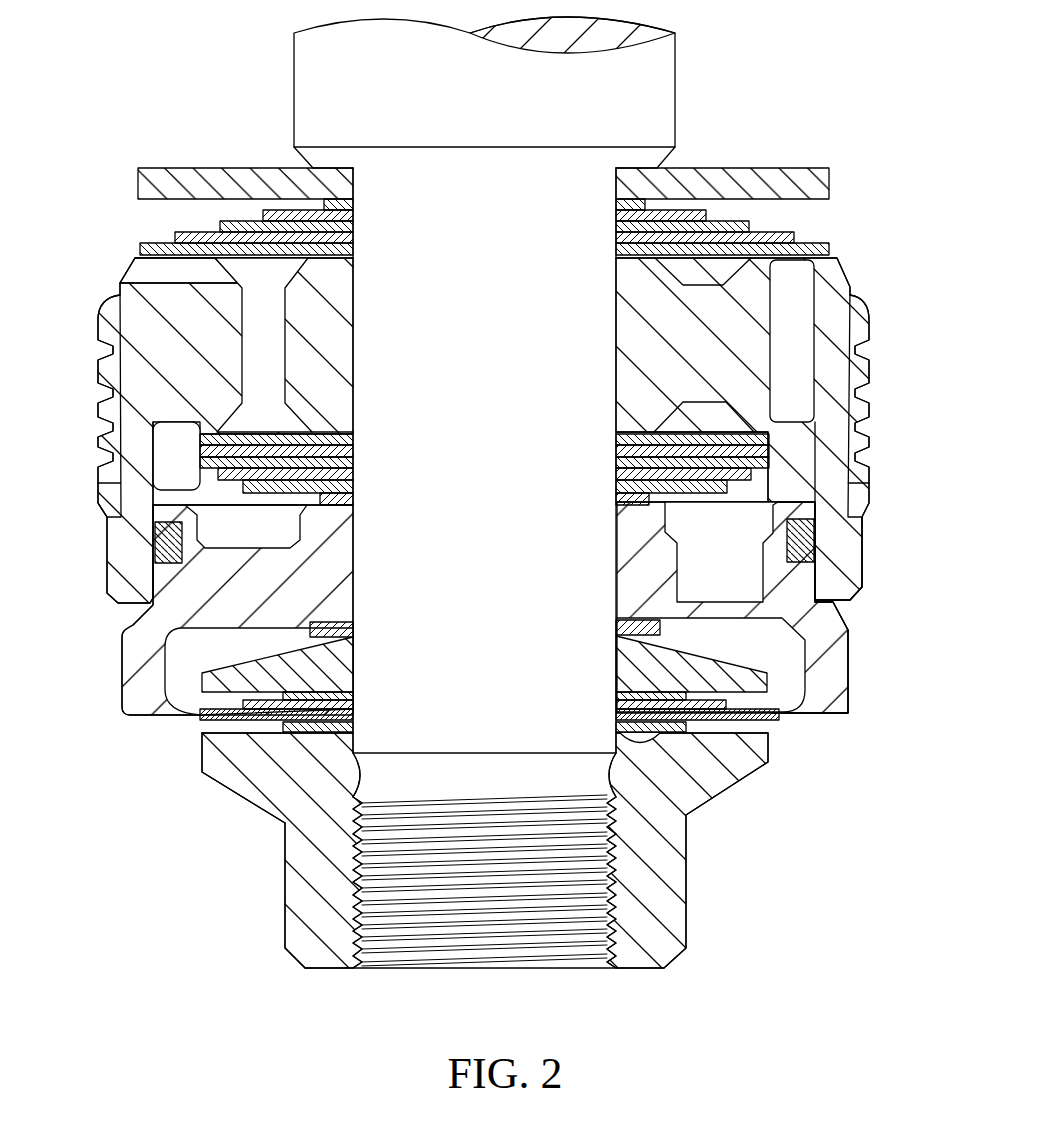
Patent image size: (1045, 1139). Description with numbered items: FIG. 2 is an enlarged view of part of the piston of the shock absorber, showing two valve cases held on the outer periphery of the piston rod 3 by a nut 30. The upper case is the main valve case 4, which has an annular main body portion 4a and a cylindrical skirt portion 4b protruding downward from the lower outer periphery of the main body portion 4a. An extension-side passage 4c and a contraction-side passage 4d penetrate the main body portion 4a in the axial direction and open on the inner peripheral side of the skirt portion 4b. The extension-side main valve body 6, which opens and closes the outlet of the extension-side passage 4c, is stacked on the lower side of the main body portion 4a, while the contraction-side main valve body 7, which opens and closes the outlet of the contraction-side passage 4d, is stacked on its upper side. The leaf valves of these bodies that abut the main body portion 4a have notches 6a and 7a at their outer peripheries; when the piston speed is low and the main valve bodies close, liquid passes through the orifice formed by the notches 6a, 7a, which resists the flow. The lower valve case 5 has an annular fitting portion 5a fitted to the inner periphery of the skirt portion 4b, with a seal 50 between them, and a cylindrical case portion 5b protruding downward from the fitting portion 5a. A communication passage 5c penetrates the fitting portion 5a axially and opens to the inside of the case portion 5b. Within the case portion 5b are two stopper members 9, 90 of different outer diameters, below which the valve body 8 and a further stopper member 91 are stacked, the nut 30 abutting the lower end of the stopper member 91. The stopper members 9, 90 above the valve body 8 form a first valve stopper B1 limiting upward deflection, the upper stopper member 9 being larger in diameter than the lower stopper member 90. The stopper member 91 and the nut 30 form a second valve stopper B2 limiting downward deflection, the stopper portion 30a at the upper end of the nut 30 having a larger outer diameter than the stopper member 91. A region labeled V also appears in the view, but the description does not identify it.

The piston rod 3 is at (676, 93).
The contraction-side main valve body 7 is at (797, 220).
The notch 7a is at (832, 247).
The vibration damping laminate V is at (137, 222).
The main valve case 4 is at (851, 282).
The main body portion 4a is at (135, 315).
The skirt portion 4b is at (115, 556).
The extension-side passage 4c is at (275, 358).
The contraction-side passage 4d is at (798, 372).
The extension-side main valve body 6 is at (190, 481).
The notch 6a is at (196, 438).
The valve case 5 is at (118, 662).
The fitting portion 5a is at (834, 517).
The case portion 5b is at (848, 668).
The communication passage 5c is at (732, 582).
The seal 50 is at (820, 541).
The stopper member 9 is at (188, 630).
The stopper member 90 is at (312, 690).
The first valve stopper B1 is at (772, 677).
The valve body 8 is at (207, 720).
The second valve stopper B2 is at (197, 765).
The nut 30 is at (283, 897).
The stopper portion 30a is at (770, 765).
The stopper member 91 is at (653, 740).